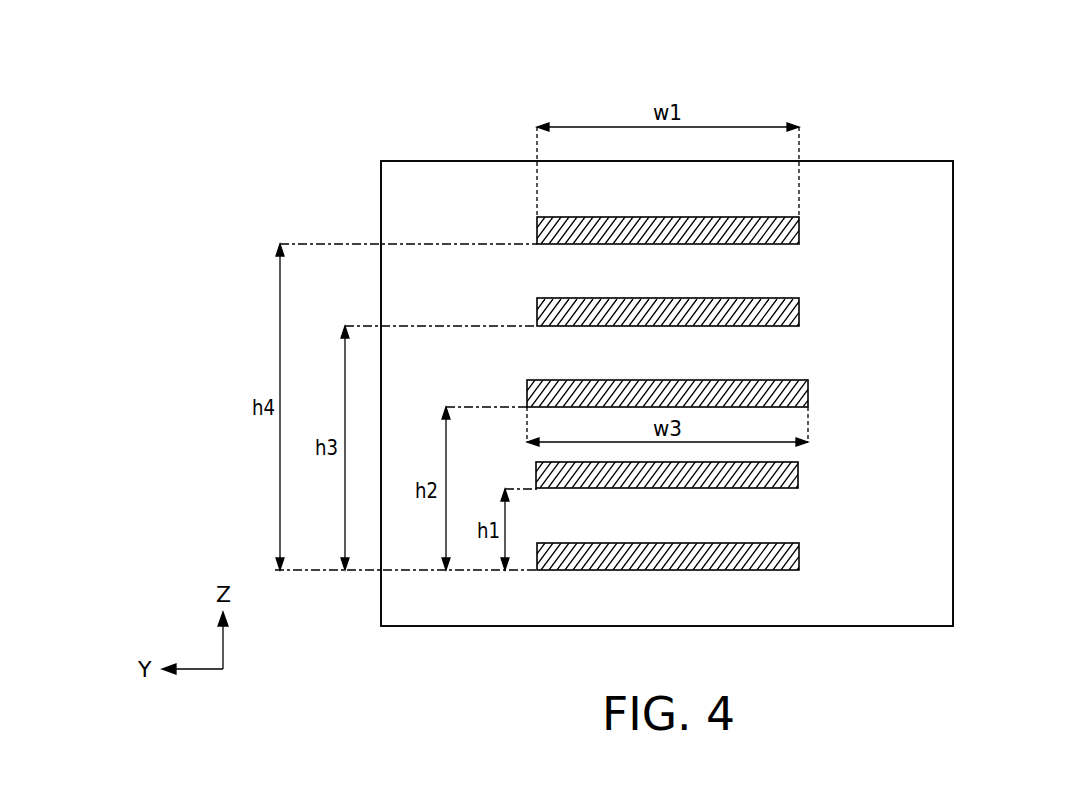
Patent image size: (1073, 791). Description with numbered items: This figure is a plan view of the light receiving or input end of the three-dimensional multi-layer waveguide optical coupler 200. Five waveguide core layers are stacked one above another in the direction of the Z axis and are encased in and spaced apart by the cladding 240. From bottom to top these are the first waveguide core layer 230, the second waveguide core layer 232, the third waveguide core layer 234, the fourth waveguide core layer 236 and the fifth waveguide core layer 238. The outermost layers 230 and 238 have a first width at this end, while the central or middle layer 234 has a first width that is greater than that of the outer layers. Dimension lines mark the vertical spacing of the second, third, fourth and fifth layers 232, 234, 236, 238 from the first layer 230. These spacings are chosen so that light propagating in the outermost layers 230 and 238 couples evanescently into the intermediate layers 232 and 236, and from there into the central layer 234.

The three-dimensional multi-layer waveguide optical coupler 200 is at (190, 91).
The first waveguide core layer 230 is at (793, 555).
The second waveguide core layer 232 is at (792, 473).
The third waveguide core layer 234 is at (802, 390).
The fourth waveguide core layer 236 is at (793, 309).
The fifth waveguide core layer 238 is at (793, 229).
The cladding 240 is at (943, 596).